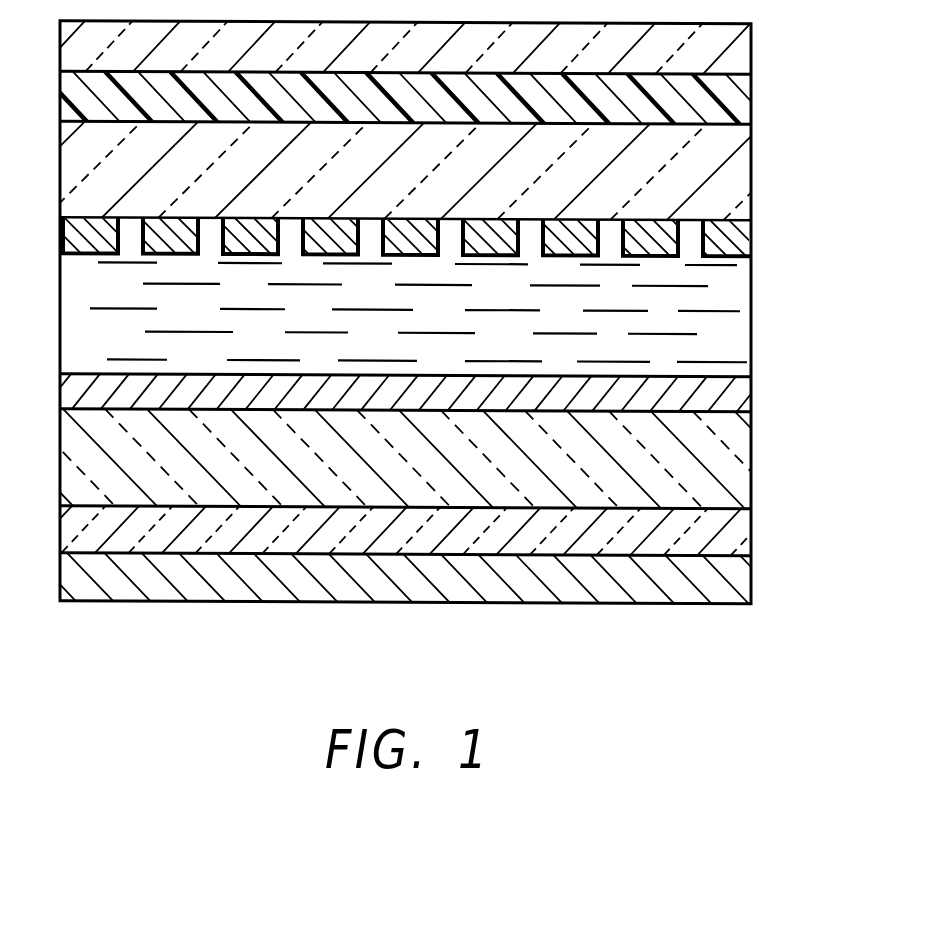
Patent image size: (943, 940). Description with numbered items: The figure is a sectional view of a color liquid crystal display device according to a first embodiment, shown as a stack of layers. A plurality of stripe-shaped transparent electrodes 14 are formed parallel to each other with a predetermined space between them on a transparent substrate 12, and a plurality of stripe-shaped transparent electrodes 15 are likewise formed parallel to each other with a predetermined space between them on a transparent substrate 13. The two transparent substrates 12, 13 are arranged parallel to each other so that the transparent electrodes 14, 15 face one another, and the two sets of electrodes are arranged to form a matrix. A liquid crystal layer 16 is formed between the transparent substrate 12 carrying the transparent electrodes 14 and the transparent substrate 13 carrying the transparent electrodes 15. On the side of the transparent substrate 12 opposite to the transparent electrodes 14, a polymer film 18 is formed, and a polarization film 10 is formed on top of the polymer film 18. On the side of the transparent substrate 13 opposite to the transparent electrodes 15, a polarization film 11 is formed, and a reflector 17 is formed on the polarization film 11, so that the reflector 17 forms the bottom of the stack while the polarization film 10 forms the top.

The polarization film 10 is at (737, 56).
The polymer film 18 is at (737, 99).
The transparent substrate 12 is at (735, 185).
The transparent electrodes 14 is at (735, 248).
The liquid crystal layer 16 is at (730, 330).
The transparent electrodes 15 is at (730, 410).
The transparent substrate 13 is at (730, 476).
The polarization film 11 is at (730, 539).
The reflector 17 is at (727, 598).